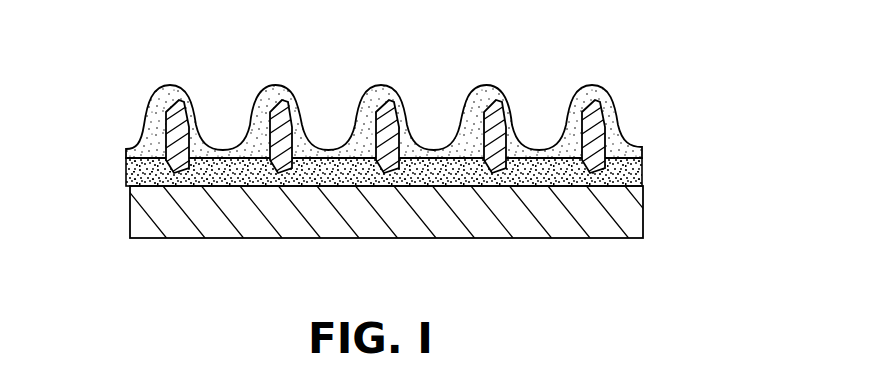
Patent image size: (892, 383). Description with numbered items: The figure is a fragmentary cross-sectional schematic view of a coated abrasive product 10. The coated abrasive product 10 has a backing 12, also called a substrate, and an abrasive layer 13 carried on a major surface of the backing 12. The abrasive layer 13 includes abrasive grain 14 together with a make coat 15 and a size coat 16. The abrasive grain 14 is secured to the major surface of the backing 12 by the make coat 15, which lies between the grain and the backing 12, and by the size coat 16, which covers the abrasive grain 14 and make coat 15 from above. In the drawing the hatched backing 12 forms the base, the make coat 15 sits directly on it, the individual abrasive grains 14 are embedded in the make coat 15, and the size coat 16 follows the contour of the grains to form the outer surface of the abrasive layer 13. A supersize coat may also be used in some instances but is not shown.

The coated abrasive product 10 is at (625, 55).
The backing 12 is at (218, 223).
The abrasive layer 13 is at (654, 155).
The abrasive grain 14 is at (273, 113).
The make coat 15 is at (127, 173).
The size coat 16 is at (147, 138).